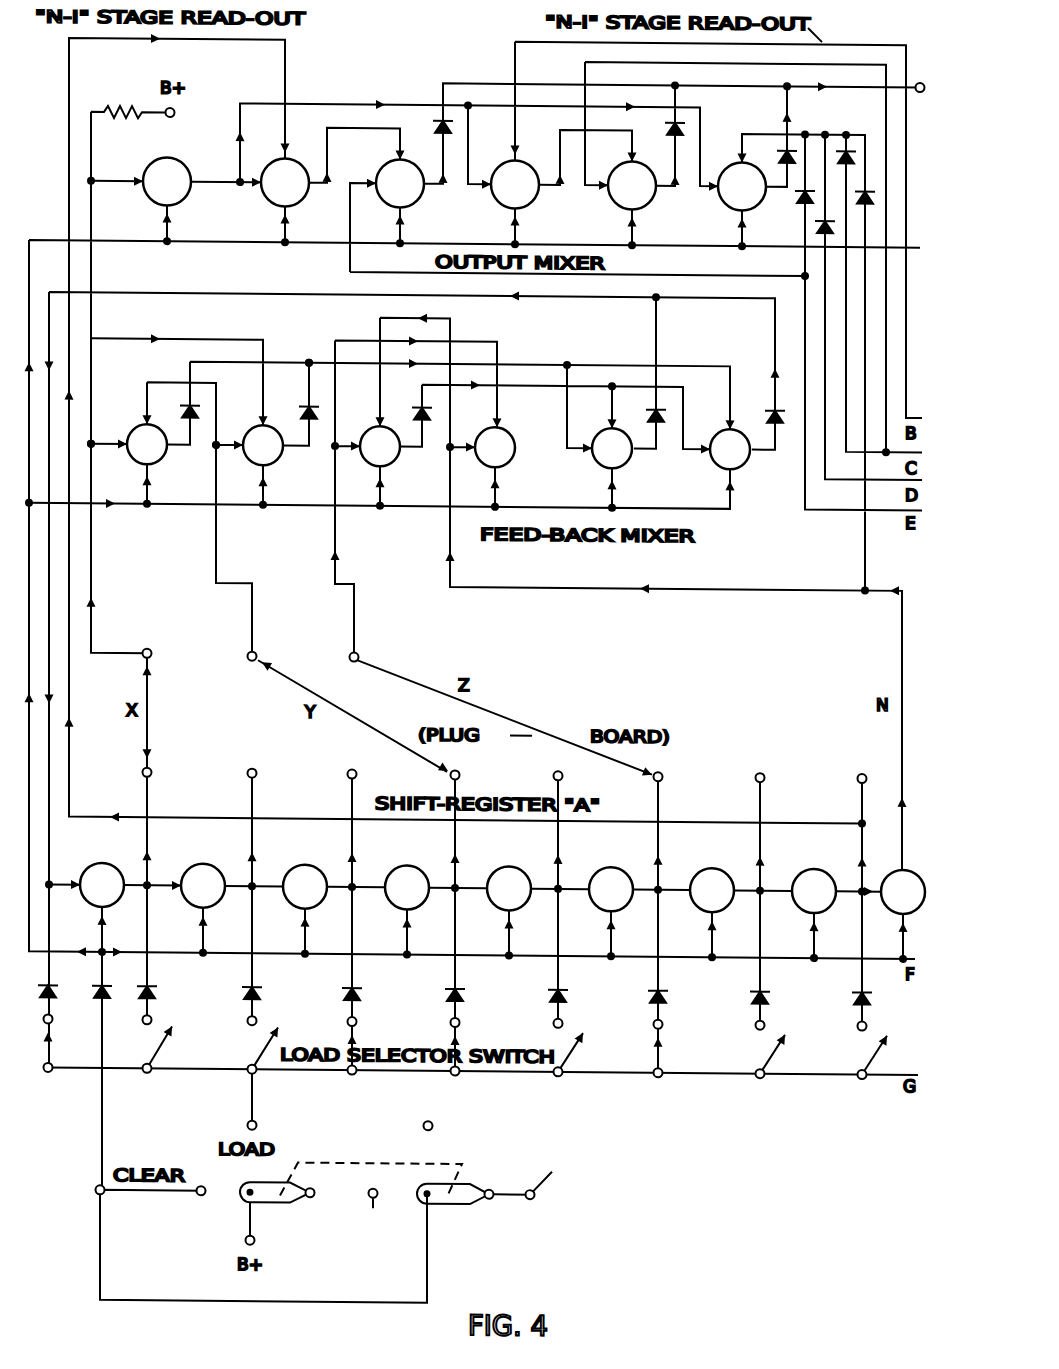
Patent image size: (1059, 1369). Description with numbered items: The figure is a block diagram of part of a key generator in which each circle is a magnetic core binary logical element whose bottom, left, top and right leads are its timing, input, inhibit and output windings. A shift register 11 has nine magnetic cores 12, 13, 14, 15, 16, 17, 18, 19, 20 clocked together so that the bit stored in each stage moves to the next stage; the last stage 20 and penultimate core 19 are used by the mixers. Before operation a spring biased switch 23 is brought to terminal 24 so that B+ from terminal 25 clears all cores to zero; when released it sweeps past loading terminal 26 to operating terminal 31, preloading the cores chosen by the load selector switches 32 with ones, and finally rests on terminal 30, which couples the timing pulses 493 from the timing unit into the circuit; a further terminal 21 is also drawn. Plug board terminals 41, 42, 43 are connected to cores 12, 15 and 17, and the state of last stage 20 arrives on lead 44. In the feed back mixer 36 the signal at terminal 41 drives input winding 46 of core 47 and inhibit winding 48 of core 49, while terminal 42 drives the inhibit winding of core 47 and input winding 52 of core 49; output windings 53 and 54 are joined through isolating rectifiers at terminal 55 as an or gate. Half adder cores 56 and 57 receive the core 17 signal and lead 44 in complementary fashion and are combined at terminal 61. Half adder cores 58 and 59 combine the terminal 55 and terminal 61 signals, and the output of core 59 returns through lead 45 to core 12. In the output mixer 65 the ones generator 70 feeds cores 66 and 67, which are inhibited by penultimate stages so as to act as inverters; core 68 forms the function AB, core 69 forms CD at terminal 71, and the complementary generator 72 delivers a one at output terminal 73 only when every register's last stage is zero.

The shift register 11 is at (700, 778).
The magnetic core 12 is at (107, 863).
The magnetic core 13 is at (208, 863).
The magnetic core 14 is at (310, 863).
The magnetic core 15 is at (412, 863).
The magnetic core 16 is at (514, 863).
The magnetic core 17 is at (616, 863).
The magnetic core 18 is at (717, 863).
The magnetic core 19 is at (819, 863).
The last stage 20 is at (908, 863).
The terminal 21 is at (368, 1210).
The spring biased switch 23 is at (292, 1203).
The terminal 24 is at (200, 1194).
The terminal 25 is at (255, 1238).
The loading terminal 26 is at (256, 1121).
The terminal 30 is at (450, 1204).
The operating terminal 31 is at (492, 1198).
The load selector switches 32 is at (512, 1008).
The feed back mixer 36 is at (578, 494).
The plug board terminal 41 is at (152, 649).
The plug board terminal 42 is at (258, 650).
The plug board terminal 43 is at (360, 650).
The lead 44 is at (555, 586).
The lead 45 is at (571, 293).
The input winding 46 is at (102, 448).
The magnetic core 47 is at (160, 461).
The inhibit winding 48 is at (263, 389).
The magnetic core 49 is at (272, 418).
The input winding 52 is at (219, 449).
The output winding 53 is at (181, 448).
The output winding 54 is at (276, 459).
The terminal 55 is at (309, 357).
The half adder core 56 is at (393, 459).
The half adder core 57 is at (508, 459).
The half adder core 58 is at (626, 459).
The half adder core 59 is at (744, 459).
The terminal 61 is at (545, 382).
The output mixer 65 is at (603, 234).
The magnetic core 66 is at (302, 199).
The magnetic core 67 is at (531, 199).
The magnetic core 68 is at (416, 199).
The magnetic core 69 is at (648, 199).
The ones generator 70 is at (184, 198).
The terminal 71 is at (677, 78).
The complementary generator 72 is at (758, 199).
The output terminal 73 is at (791, 84).
The timing unit 493 is at (631, 1163).